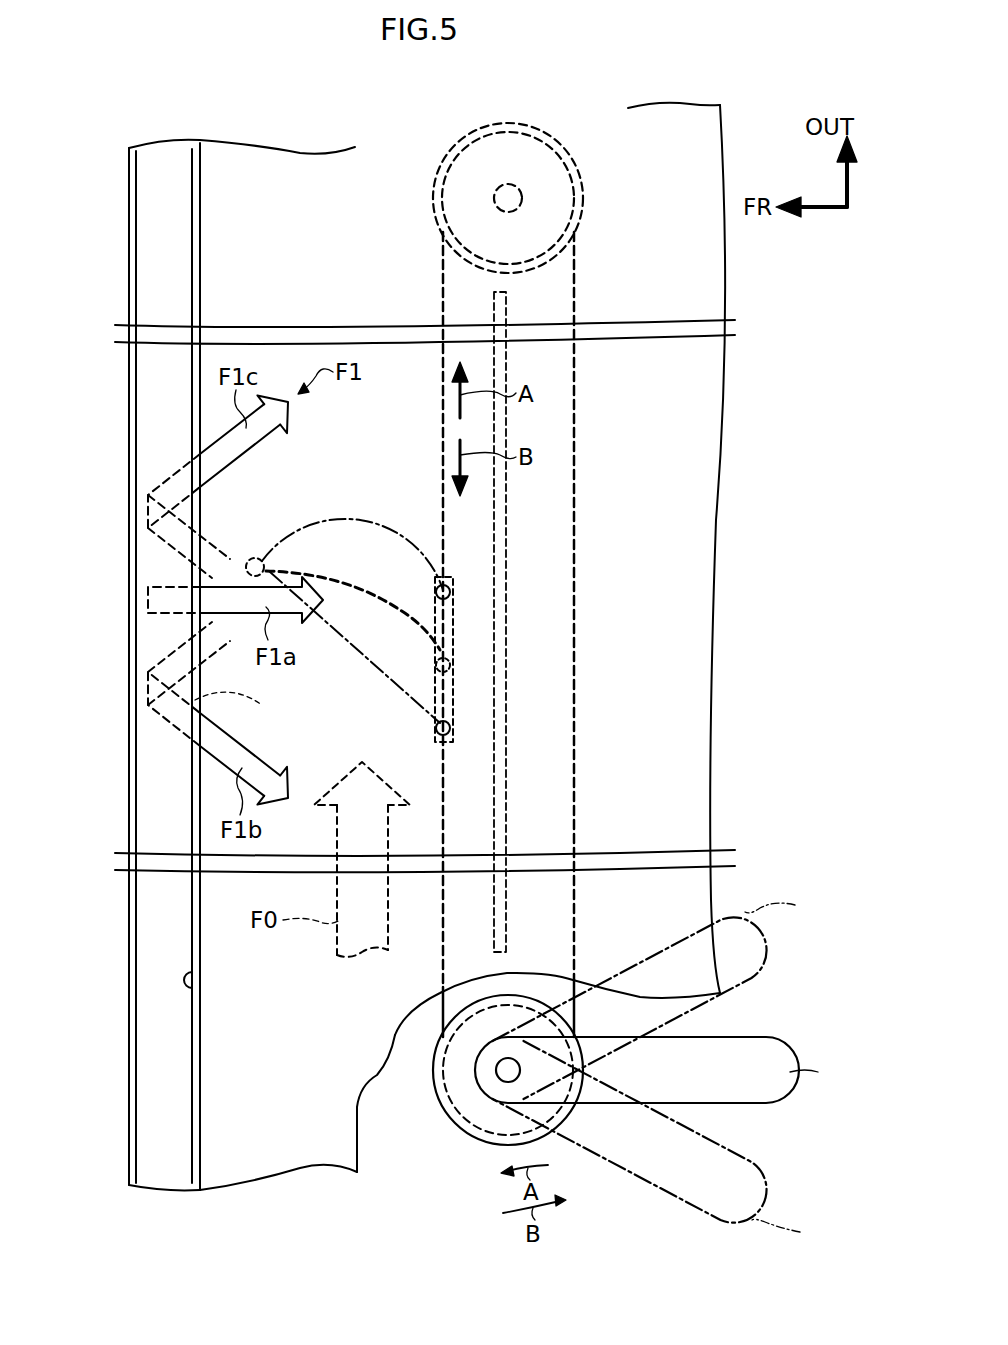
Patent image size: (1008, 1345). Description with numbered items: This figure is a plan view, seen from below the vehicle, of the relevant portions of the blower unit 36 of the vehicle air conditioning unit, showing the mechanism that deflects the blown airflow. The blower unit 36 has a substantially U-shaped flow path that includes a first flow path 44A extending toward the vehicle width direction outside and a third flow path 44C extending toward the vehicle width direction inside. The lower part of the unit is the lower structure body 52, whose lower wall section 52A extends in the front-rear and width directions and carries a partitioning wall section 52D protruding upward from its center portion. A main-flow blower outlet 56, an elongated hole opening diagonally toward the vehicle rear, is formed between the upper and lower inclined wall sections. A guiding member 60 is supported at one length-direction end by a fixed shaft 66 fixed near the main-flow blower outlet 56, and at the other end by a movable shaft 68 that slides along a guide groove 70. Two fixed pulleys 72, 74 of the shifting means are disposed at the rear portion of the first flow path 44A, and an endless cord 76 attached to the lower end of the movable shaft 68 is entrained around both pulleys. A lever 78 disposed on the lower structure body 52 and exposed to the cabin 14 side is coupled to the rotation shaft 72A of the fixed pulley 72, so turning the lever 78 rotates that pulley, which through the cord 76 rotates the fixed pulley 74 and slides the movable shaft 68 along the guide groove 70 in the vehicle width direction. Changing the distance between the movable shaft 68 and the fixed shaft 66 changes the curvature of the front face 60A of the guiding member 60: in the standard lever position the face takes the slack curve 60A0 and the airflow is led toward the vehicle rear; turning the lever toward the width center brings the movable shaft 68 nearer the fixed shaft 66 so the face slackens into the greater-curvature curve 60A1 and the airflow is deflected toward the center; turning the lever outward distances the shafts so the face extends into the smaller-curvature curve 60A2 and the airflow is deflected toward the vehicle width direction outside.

The blower unit 36 is at (117, 208).
The first flow path 44A is at (195, 700).
The third flow path 44C is at (640, 722).
The lower structure body 52 is at (312, 1174).
The lower wall section 52A is at (250, 1165).
The partitioning wall section 52D is at (505, 510).
The main-flow blower outlet 56 is at (200, 985).
The guiding member 60 is at (348, 592).
The front face of the guiding member 60A is at (352, 601).
The curve of the front face in the standard position 60A0 is at (388, 603).
The curve of the front face with increased curvature 60A1 is at (386, 526).
The curve of the front face with decreased curvature 60A2 is at (380, 670).
The fixed shaft 66 is at (253, 558).
The movable shaft 68 is at (450, 592).
The guide groove 70 is at (453, 633).
The fixed pulley 72 is at (475, 1118).
The rotation shaft 72A is at (500, 1075).
The fixed pulley 74 is at (556, 190).
The cord 76 is at (440, 1017).
The lever 78 is at (760, 945).
The cabin 14 is at (848, 1160).